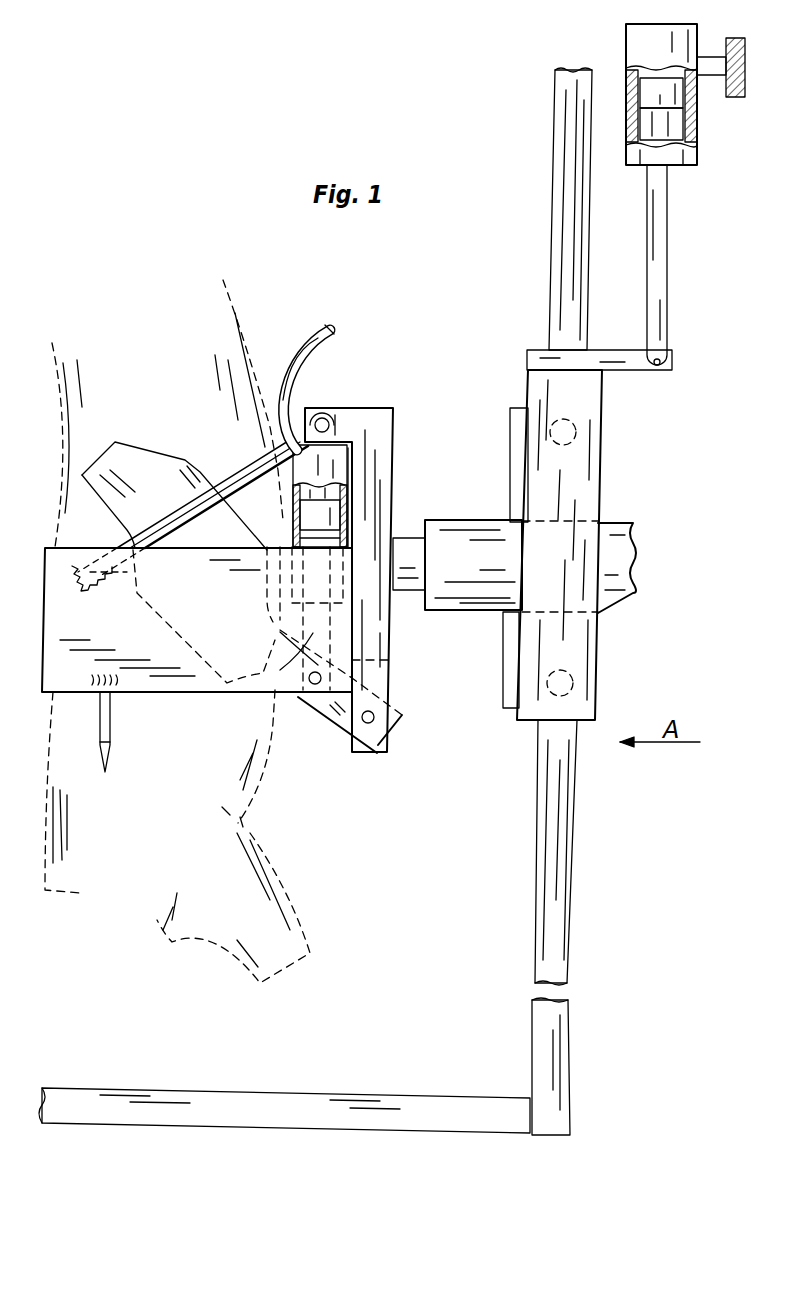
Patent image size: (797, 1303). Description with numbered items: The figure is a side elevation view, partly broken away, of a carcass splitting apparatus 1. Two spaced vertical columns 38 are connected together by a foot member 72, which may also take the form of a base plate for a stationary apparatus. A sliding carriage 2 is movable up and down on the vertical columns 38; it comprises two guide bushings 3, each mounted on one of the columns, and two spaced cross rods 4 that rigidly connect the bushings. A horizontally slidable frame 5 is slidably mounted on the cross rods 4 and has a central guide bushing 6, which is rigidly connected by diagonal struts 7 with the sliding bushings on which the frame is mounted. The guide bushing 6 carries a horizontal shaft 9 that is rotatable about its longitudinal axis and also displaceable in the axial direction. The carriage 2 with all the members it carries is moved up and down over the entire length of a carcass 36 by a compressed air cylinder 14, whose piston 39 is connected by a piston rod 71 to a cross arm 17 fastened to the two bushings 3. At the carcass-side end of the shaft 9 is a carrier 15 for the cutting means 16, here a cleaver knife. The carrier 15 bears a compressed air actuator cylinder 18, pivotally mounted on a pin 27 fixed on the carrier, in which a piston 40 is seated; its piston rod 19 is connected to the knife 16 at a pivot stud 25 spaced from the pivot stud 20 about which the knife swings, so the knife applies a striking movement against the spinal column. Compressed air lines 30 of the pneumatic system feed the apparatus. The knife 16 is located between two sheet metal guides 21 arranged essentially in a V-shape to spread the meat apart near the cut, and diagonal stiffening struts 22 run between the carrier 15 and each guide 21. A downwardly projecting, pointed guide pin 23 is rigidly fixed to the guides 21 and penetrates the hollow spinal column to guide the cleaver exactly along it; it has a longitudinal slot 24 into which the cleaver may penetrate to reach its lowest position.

The device 1 is at (468, 795).
The sliding carriage 2 is at (605, 630).
The guide bushing 3 is at (529, 655).
The cross rod 4 is at (580, 432).
The horizontally slidable frame 5 is at (470, 500).
The central guide bushing 6 is at (464, 600).
The diagonal strut 7 is at (517, 428).
The horizontal shaft 9 is at (407, 540).
The compressed air cylinder 14 is at (697, 140).
The carrier 15 is at (405, 447).
The cutting means 16 is at (167, 458).
The cross arm 17 is at (608, 356).
The compressed air actuator cylinder 18 is at (292, 525).
The piston rod 19 is at (252, 692).
The pivot stud 20 is at (377, 723).
The sheet metal guide 21 is at (161, 694).
The diagonal stiffening strut 22 is at (122, 547).
The guide pin 23 is at (118, 745).
The longitudinal slot 24 is at (104, 727).
The pivot stud 25 is at (312, 686).
The pin 27 is at (324, 415).
The compressed air line 30 is at (312, 347).
The carcass 36 is at (234, 310).
The vertical column 38 is at (563, 227).
The piston 39 is at (700, 108).
The piston 40 is at (350, 553).
The piston rod 71 is at (670, 278).
The foot member 72 is at (414, 1100).